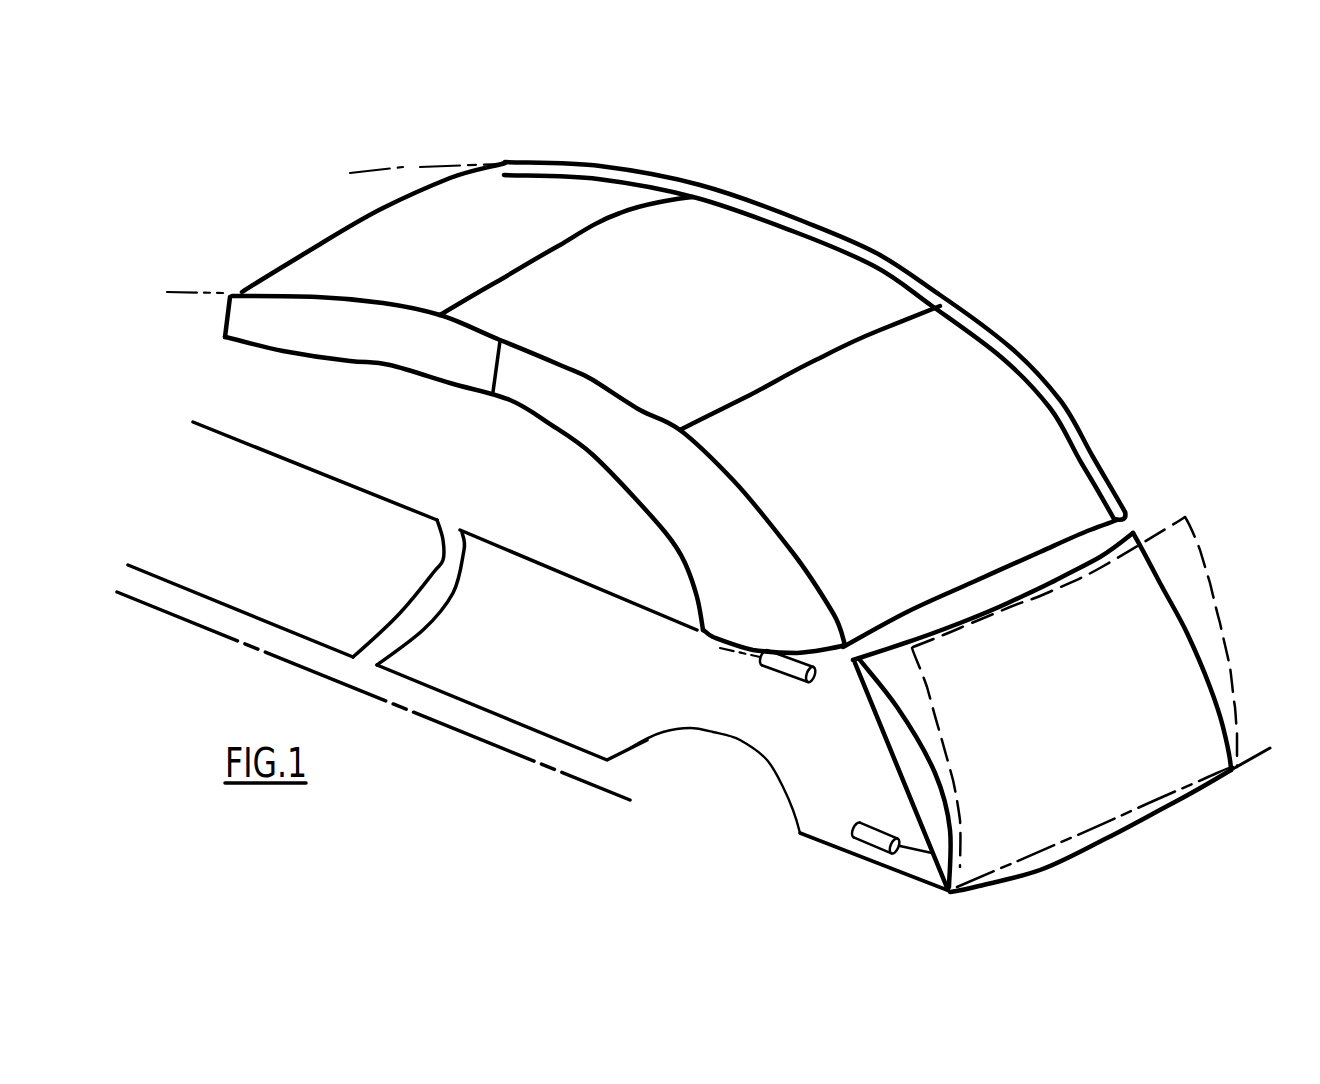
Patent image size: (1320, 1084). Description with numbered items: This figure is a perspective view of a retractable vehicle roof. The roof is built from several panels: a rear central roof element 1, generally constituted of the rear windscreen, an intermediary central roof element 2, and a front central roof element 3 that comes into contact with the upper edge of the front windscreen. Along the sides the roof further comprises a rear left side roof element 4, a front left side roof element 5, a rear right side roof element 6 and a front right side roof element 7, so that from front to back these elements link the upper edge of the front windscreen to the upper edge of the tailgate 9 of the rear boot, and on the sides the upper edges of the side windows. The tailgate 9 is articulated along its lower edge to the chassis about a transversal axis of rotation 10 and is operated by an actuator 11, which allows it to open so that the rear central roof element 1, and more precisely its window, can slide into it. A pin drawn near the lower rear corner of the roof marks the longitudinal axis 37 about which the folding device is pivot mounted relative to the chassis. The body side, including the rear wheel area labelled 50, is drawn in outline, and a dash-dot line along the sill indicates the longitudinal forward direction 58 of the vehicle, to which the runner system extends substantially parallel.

The rear central roof element 1 is at (988, 450).
The intermediary central roof element 2 is at (710, 287).
The front central roof element 3 is at (445, 207).
The rear left side roof element 4 is at (658, 483).
The front left side roof element 5 is at (398, 330).
The rear right side roof element 6 is at (990, 343).
The front right side roof element 7 is at (633, 172).
The tailgate 9 is at (1117, 613).
The transversal axis of rotation 10 is at (1247, 753).
The actuator 11 is at (867, 830).
The longitudinal axis 37 is at (773, 677).
The vehicle body rear fender 50 is at (627, 710).
The longitudinal forward direction 58 is at (512, 748).